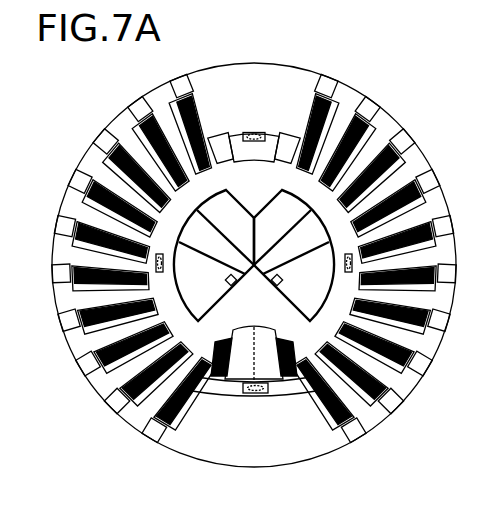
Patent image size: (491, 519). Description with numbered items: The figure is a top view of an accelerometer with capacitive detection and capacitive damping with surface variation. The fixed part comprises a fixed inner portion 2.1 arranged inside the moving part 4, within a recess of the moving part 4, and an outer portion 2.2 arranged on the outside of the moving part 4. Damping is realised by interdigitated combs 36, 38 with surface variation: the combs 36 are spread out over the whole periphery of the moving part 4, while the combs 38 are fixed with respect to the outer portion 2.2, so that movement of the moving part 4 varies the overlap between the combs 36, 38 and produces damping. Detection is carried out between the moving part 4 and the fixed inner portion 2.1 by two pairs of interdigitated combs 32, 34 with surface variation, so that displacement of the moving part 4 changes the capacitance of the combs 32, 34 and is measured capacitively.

The fixed inner portion 2.1 is at (240, 366).
The outer portion 2.2 is at (370, 106).
The moving part 4 is at (242, 178).
The interdigitated comb 32 is at (215, 377).
The interdigitated comb 34 is at (293, 377).
The interdigitated comb 36 is at (342, 113).
The interdigitated comb 38 is at (321, 109).